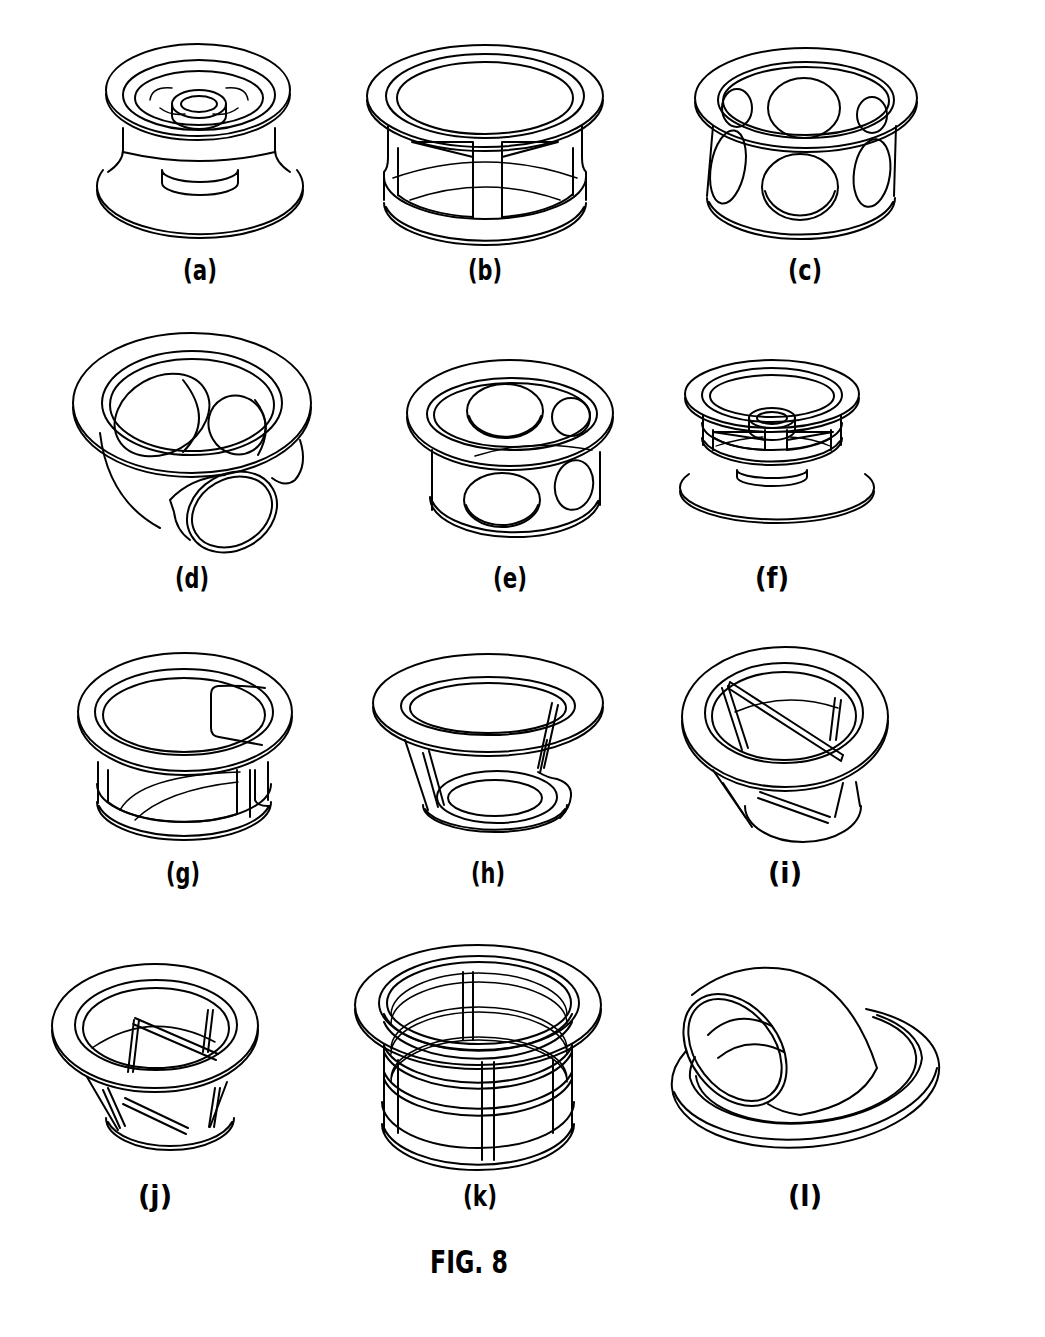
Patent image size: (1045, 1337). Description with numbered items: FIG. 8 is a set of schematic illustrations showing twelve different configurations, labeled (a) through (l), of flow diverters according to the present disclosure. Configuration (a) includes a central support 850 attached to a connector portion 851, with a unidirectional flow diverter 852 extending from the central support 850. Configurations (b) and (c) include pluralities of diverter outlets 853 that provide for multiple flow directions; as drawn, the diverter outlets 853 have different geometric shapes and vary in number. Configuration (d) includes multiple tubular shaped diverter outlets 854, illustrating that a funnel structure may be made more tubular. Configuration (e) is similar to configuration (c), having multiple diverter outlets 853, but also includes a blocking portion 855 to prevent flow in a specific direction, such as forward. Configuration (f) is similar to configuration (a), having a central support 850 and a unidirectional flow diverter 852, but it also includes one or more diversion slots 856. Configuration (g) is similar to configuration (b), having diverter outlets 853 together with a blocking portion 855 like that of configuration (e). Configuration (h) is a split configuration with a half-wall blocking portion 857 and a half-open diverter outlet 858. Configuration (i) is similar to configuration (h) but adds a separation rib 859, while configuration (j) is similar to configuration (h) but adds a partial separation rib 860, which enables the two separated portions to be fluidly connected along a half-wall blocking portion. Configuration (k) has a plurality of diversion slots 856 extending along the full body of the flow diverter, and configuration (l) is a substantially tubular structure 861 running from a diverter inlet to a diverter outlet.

The central support 850 is at (200, 106).
The connector portion 851 is at (242, 54).
The unidirectional flow diverter 852 is at (113, 168).
The diverter outlets 853 is at (514, 100).
The tubular shaped diverter outlets 854 is at (290, 463).
The blocking portion 855 is at (447, 477).
The diversion slots 856 is at (821, 436).
The half-wall blocking portion 857 is at (447, 706).
The half-open diverter outlet 858 is at (564, 759).
The separation rib 859 is at (830, 798).
The partial separation rib 860 is at (199, 1107).
The substantially tubular structure 861 is at (747, 988).